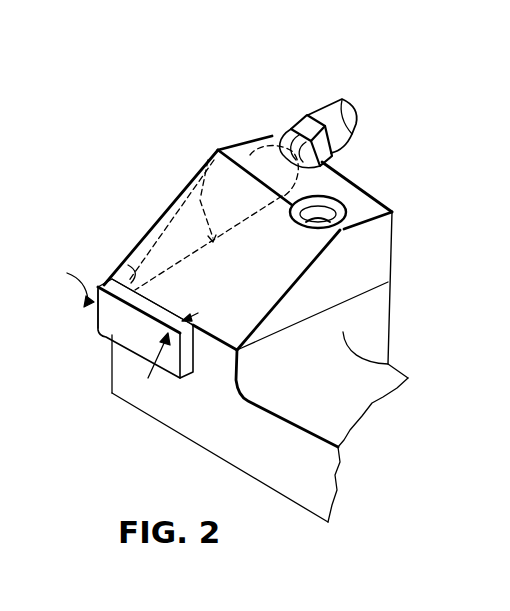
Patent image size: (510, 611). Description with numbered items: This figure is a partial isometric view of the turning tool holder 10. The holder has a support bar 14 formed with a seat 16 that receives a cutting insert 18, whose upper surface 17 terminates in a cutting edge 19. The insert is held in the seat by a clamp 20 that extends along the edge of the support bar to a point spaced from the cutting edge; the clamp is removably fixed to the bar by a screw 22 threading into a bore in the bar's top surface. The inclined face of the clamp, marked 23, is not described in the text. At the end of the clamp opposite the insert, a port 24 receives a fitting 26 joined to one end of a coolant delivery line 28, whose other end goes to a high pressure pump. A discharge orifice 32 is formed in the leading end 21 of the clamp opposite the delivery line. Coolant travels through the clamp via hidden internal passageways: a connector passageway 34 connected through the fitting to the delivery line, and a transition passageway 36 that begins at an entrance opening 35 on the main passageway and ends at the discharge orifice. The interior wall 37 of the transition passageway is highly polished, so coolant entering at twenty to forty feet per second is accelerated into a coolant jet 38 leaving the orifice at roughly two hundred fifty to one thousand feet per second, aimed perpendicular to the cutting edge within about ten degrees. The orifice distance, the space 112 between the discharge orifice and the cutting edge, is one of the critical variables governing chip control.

The tool holder 10 is at (140, 145).
The support bar 14 is at (321, 466).
The seat 16 is at (189, 380).
The upper surface 17 is at (155, 299).
The cutting insert 18 is at (100, 338).
The cutting edge 19 is at (118, 298).
The clamp 20 is at (388, 254).
The leading end 21 is at (232, 350).
The screw 22 is at (330, 213).
The inclined face 23 is at (282, 263).
The port 24 is at (262, 137).
The fitting 26 is at (300, 118).
The coolant delivery line 28 is at (343, 119).
The discharge orifice 32 is at (128, 265).
The connector passageway 34 is at (216, 176).
The entrance opening 35 is at (200, 203).
The transition passageway 36 is at (157, 225).
The interior wall 37 is at (178, 262).
The coolant jet 38 is at (60, 286).
The space 112 is at (149, 367).